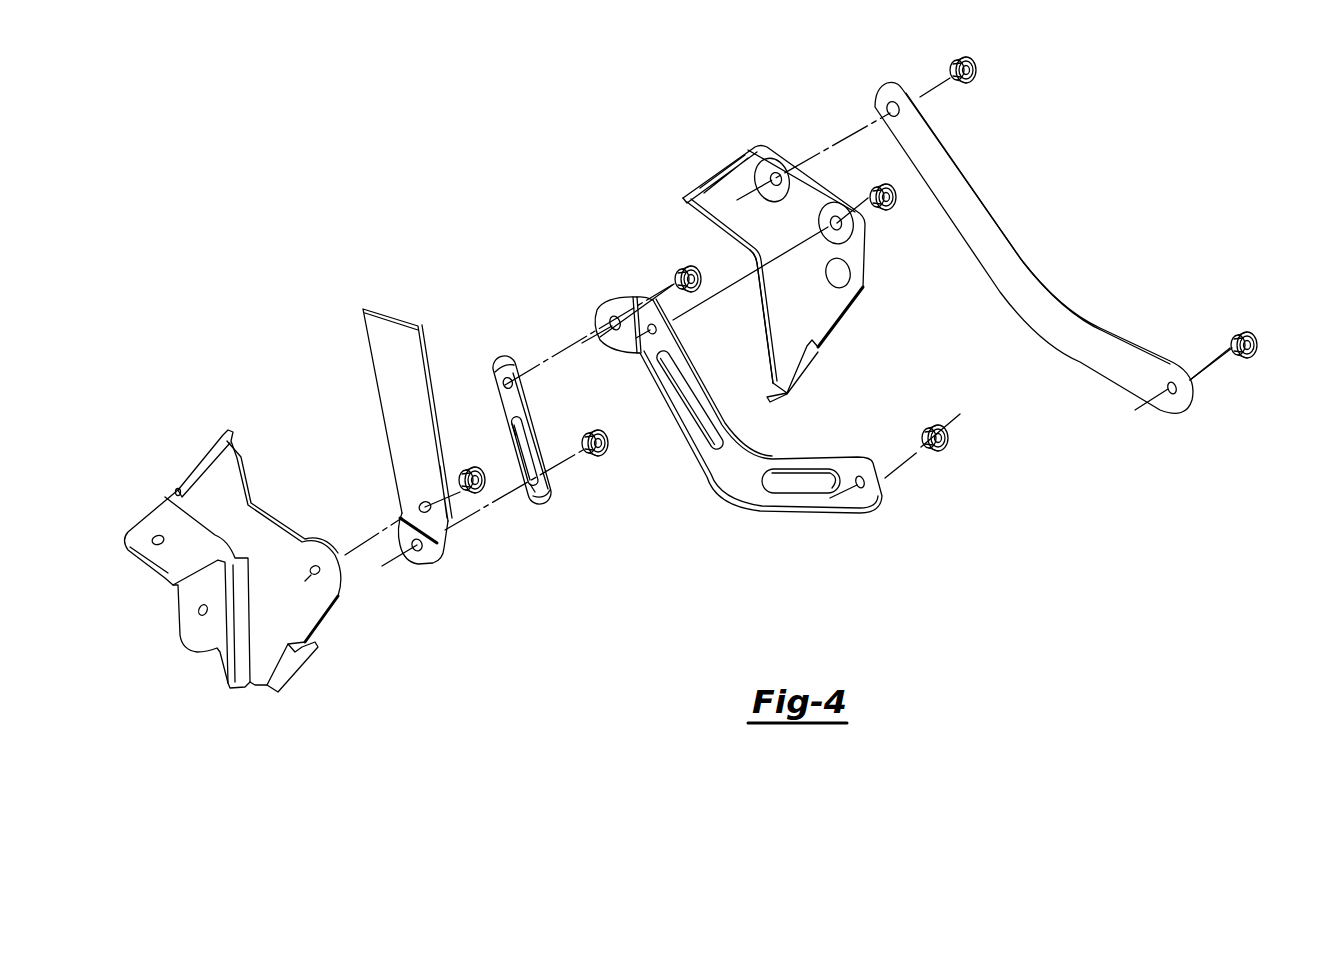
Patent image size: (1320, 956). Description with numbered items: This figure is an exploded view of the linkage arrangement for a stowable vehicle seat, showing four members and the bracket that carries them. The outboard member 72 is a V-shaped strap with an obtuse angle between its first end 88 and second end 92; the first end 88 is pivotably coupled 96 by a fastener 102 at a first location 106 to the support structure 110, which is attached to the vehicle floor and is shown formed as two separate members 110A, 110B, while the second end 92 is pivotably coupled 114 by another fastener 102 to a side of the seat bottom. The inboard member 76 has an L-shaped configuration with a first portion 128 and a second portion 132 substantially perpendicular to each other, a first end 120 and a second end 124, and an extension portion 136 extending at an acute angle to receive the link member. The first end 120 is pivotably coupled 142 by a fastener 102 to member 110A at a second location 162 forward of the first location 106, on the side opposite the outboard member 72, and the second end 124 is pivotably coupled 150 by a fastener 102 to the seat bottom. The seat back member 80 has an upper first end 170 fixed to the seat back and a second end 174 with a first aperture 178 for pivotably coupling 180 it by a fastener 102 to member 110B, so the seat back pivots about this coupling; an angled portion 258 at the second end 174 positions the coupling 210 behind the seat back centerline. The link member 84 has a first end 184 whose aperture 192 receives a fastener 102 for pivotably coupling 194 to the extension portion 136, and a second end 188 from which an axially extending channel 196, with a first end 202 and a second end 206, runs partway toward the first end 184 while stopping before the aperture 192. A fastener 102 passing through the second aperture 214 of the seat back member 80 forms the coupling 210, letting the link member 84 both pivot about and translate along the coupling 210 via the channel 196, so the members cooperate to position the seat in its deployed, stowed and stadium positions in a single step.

The outboard member 72 is at (988, 203).
The inboard member 76 is at (708, 474).
The seat back member 80 is at (372, 367).
The link member 84 is at (537, 400).
The first end 88 is at (888, 84).
The second end 92 is at (1193, 400).
The pivotable coupling 96 is at (858, 138).
The fastener 102 is at (978, 68).
The first location 106 is at (752, 168).
The support structure 110 is at (495, 380).
The support structure member 110A is at (760, 146).
The support structure member 110B is at (183, 465).
The pivotable coupling 114 is at (1205, 358).
The first end 120 is at (642, 352).
The second end 124 is at (885, 497).
The first portion 128 is at (800, 456).
The second portion 132 is at (704, 395).
The extension portion 136 is at (597, 312).
The pivotable coupling 142 is at (725, 288).
The pivotable coupling 150 is at (896, 453).
The second location 162 is at (840, 243).
The first end 170 is at (395, 310).
The second end 174 is at (415, 565).
The first aperture 178 is at (421, 508).
The pivotable coupling 180 is at (348, 553).
The first end 184 is at (507, 366).
The second end 188 is at (542, 495).
The aperture 192 is at (504, 385).
The pivotable coupling 194 is at (550, 357).
The channel 196 is at (513, 452).
The first end 202 is at (514, 426).
The second end 206 is at (522, 492).
The coupling 210 is at (468, 522).
The second aperture 214 is at (412, 552).
The angled portion 258 is at (438, 546).